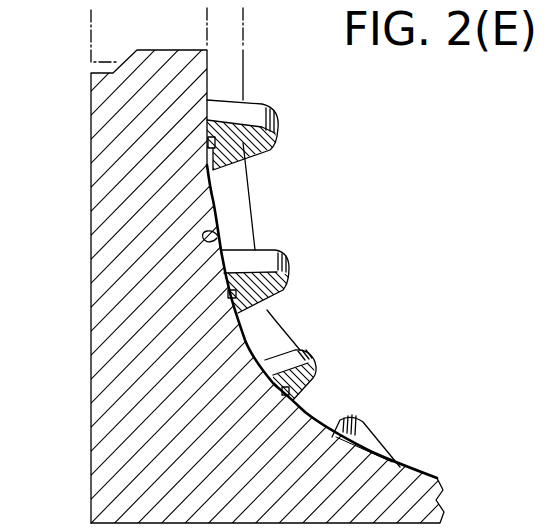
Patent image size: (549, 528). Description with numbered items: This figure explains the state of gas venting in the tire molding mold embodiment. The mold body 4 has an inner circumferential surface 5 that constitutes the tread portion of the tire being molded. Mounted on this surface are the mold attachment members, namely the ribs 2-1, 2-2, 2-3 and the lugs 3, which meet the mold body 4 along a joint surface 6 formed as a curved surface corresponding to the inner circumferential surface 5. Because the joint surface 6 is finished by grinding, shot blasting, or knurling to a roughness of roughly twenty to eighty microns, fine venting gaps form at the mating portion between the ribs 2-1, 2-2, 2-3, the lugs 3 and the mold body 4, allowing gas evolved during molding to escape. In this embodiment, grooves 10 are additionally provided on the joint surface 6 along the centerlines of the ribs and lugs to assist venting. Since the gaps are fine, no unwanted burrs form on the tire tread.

The mold body 4 is at (90, 228).
The lugs 3 is at (250, 76).
The rib 2-1 is at (279, 132).
The rib 2-2 is at (291, 271).
The rib 2-3 is at (318, 359).
The grooves 10 is at (207, 143).
The inner circumferential surface 5 is at (219, 193).
The joint surface 6 is at (218, 236).